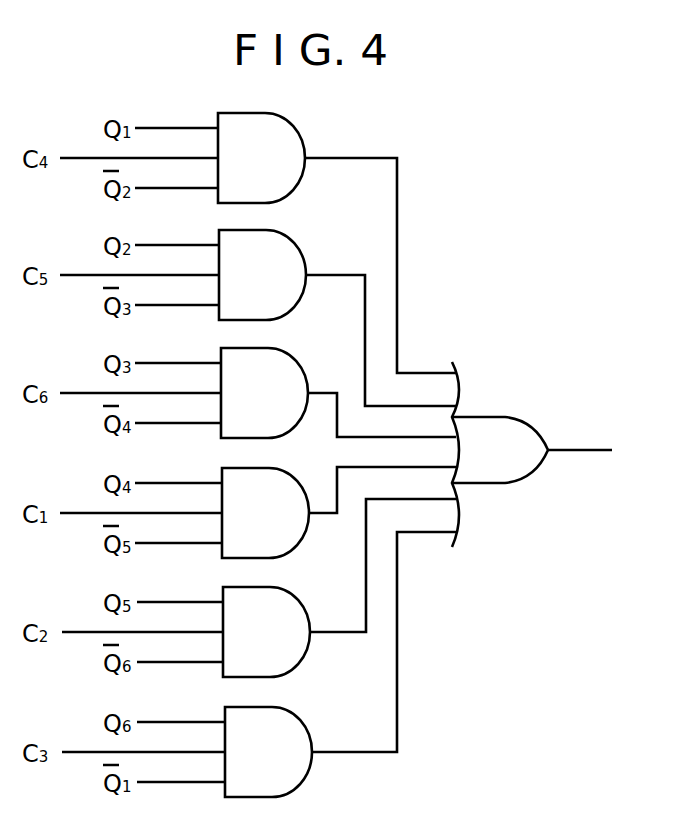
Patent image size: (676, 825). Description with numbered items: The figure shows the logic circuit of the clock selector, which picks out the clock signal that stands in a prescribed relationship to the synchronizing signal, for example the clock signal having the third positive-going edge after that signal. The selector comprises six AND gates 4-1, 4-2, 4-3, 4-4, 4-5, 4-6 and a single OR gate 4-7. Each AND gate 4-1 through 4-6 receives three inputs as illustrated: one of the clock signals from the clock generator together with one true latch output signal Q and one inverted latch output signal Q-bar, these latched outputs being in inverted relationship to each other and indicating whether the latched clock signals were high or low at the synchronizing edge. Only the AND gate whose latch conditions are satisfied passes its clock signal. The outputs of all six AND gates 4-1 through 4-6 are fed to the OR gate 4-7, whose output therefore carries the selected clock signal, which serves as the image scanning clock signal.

The AND gate 4-1 is at (337, 243).
The AND gate 4-2 is at (337, 318).
The AND gate 4-3 is at (338, 393).
The AND gate 4-4 is at (339, 512).
The AND gate 4-5 is at (339, 588).
The AND gate 4-6 is at (340, 664).
The OR gate 4-7 is at (532, 454).